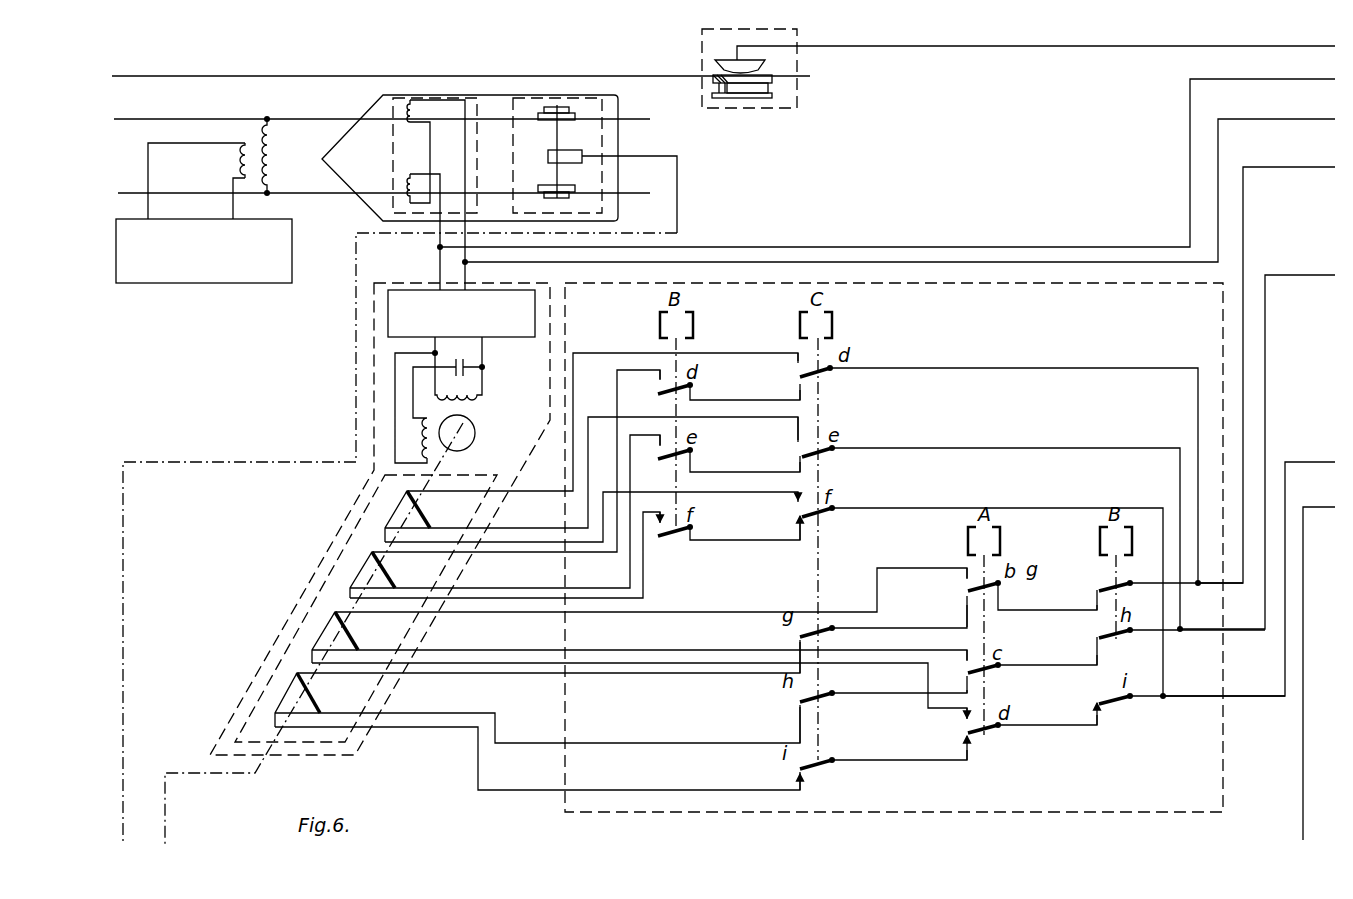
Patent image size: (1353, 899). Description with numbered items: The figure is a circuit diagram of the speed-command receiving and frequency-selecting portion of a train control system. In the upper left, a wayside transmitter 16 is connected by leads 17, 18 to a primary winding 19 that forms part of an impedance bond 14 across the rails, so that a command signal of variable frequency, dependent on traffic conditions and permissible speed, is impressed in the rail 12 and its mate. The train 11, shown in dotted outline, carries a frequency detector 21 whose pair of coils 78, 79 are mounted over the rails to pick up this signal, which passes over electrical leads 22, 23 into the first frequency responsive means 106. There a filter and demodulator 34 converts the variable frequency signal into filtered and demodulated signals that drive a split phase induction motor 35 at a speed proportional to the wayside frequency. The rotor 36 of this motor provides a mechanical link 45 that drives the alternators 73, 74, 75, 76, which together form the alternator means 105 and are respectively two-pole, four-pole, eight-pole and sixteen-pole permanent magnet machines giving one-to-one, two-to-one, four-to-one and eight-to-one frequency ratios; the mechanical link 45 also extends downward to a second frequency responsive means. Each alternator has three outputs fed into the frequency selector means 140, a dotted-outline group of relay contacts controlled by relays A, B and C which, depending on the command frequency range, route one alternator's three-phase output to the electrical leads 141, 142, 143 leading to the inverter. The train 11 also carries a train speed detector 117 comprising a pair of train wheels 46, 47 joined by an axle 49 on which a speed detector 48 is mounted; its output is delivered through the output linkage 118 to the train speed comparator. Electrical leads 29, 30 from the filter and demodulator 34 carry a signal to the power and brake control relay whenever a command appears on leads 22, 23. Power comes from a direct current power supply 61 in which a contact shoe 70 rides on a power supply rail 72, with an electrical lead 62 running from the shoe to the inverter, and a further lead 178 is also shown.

The train 11 is at (616, 97).
The rail 12 is at (326, 122).
The impedance bond 14 is at (269, 150).
The wayside transmitter 16 is at (294, 224).
The lead 17 is at (232, 209).
The lead 18 is at (146, 210).
The primary winding 19 is at (238, 160).
The frequency detector 21 is at (390, 100).
The electrical lead 22 is at (438, 251).
The electrical lead 23 is at (460, 264).
The electrical lead 29 is at (716, 244).
The electrical lead 30 is at (757, 263).
The filter and demodulator 34 is at (518, 343).
The split phase induction motor 35 is at (474, 416).
The rotor 36 is at (475, 430).
The mechanical link 45 is at (446, 466).
The train wheel 46 is at (563, 106).
The train wheel 47 is at (552, 194).
The speed detector 48 is at (548, 157).
The axle 49 is at (554, 138).
The direct current power supply 61 is at (798, 35).
The electrical lead 62 is at (948, 50).
The direct current supply contact shoe 70 is at (754, 66).
The direct current power supply rail 72 is at (772, 90).
The alternator 73 is at (418, 510).
The alternator 74 is at (386, 572).
The alternator 75 is at (346, 632).
The alternator 76 is at (314, 694).
The coil 78 is at (413, 129).
The coil 79 is at (412, 175).
The alternator means 105 is at (288, 634).
The first frequency responsive means 106 is at (356, 273).
The train speed detector 117 is at (540, 78).
The output linkage 118 is at (678, 168).
The frequency selector means 140 is at (942, 283).
The electrical lead 141 is at (1320, 169).
The electrical lead 142 is at (1319, 275).
The electrical lead 143 is at (1322, 463).
The output wire 178 is at (1328, 505).